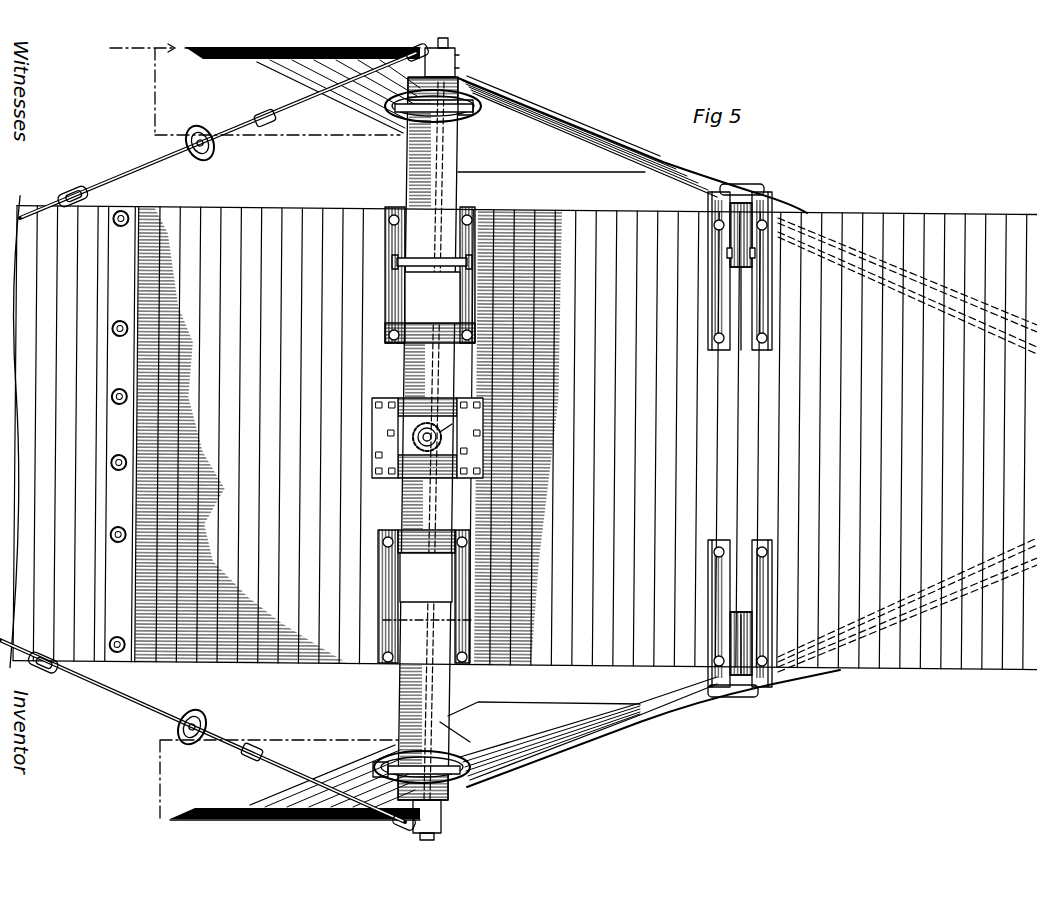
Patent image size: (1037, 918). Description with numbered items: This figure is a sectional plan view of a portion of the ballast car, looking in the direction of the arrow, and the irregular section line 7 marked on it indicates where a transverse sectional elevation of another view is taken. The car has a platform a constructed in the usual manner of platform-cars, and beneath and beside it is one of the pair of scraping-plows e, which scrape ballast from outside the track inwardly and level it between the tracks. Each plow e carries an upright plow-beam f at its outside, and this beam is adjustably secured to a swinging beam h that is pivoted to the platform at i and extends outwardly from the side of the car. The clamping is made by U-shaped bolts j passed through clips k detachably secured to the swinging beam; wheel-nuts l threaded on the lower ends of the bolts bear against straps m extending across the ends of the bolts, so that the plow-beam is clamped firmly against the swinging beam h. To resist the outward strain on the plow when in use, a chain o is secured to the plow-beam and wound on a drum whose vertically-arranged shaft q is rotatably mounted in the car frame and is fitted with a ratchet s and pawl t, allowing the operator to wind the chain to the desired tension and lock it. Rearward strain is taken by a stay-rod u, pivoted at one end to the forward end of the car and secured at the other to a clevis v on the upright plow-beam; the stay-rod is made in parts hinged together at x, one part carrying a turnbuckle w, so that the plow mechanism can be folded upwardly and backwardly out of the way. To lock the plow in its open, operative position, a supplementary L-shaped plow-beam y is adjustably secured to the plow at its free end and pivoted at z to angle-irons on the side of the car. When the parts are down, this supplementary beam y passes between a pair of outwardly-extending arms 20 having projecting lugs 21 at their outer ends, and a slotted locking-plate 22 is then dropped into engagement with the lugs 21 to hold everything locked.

The platform a is at (523, 436).
The scraping-plow e is at (538, 137).
The plow-beam f is at (460, 70).
The swinging beam h is at (407, 177).
The pivot i is at (472, 261).
The U-shaped bolt j is at (400, 132).
The clip k is at (478, 752).
The wheel-nut l is at (482, 93).
The strap m is at (398, 112).
The chain o is at (440, 378).
The shaft q is at (374, 431).
The ratchet s is at (418, 448).
The pawl t is at (485, 433).
The stay-rod u is at (282, 108).
The clevis v is at (424, 50).
The turnbuckle w is at (232, 140).
The hinge x is at (72, 190).
The supplementary L-shaped plow-beam y is at (734, 236).
The pivot z is at (732, 258).
The section line 7 is at (255, 433).
The outwardly-extending arm 20 is at (765, 194).
The projecting lug 21 is at (756, 190).
The slotted locking-plate 22 is at (750, 696).